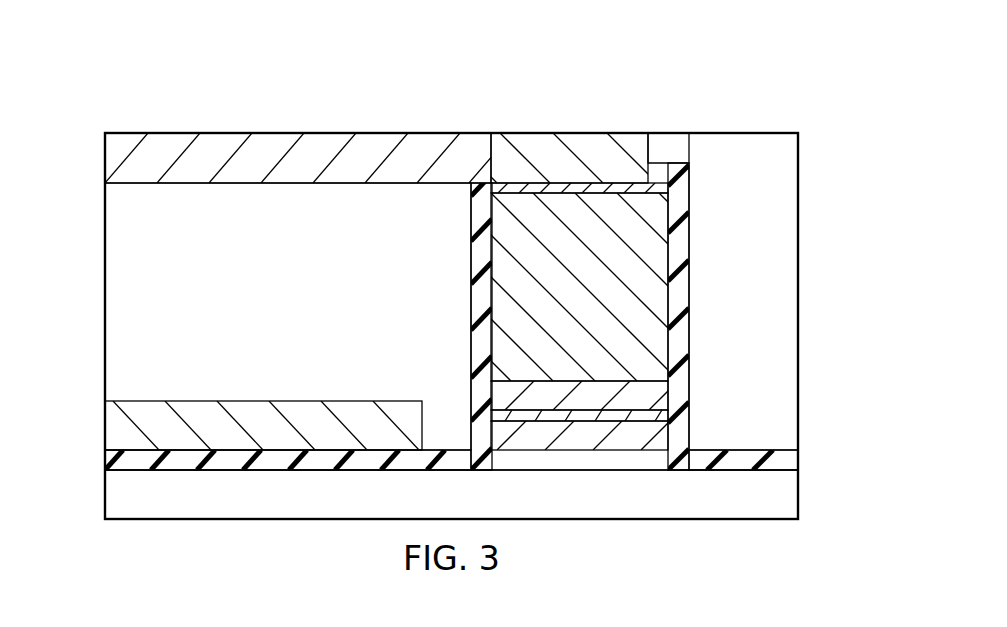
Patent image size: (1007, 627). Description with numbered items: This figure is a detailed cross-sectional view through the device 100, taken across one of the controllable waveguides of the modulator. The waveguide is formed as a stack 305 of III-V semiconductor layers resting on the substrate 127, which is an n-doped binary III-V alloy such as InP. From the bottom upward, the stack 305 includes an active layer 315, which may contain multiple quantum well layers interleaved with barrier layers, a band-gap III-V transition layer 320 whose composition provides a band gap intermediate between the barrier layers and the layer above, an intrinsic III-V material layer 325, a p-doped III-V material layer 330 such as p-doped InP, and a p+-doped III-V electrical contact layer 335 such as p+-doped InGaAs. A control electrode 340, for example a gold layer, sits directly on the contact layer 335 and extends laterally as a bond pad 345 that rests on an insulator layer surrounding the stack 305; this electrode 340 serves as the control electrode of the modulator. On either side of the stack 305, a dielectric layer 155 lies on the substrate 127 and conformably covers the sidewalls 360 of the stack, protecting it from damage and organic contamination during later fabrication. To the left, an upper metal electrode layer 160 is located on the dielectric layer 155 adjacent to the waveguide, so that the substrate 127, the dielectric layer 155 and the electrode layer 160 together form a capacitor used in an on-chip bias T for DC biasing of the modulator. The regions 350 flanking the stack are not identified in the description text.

The device 100 is at (176, 117).
The substrate 127 is at (599, 498).
The dielectric layer 155 is at (790, 462).
The upper metal electrode layer 160 is at (113, 427).
The stack 305 is at (660, 156).
The active layer 315 is at (516, 452).
The band-gap III-V transition layer 320 is at (627, 417).
The intrinsic III-V material layer 325 is at (578, 390).
The p-doped III-V material layer 330 is at (598, 299).
The p+-doped III-V electrical contact layer 335 is at (630, 194).
The control electrode 340 is at (582, 143).
The bond pad 345 is at (284, 132).
The dielectric fill 350 is at (112, 325).
The sidewalls 360 is at (480, 258).